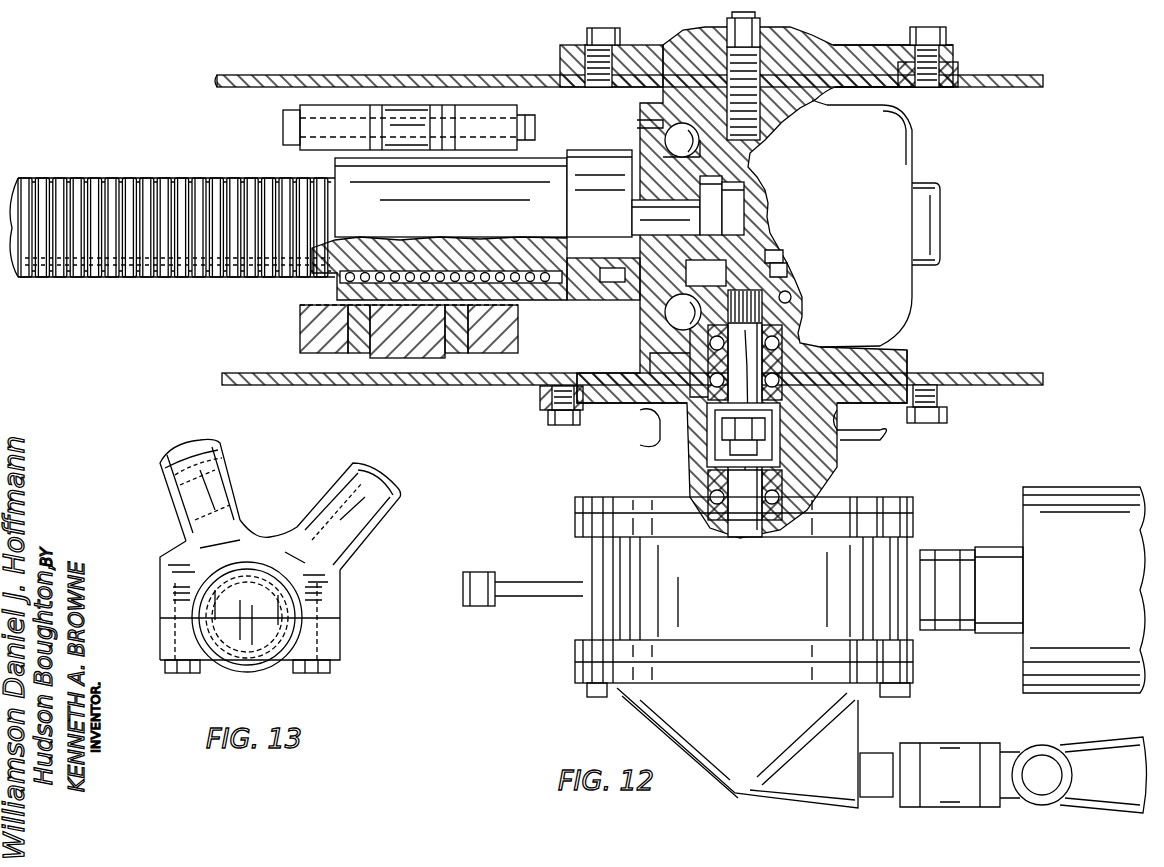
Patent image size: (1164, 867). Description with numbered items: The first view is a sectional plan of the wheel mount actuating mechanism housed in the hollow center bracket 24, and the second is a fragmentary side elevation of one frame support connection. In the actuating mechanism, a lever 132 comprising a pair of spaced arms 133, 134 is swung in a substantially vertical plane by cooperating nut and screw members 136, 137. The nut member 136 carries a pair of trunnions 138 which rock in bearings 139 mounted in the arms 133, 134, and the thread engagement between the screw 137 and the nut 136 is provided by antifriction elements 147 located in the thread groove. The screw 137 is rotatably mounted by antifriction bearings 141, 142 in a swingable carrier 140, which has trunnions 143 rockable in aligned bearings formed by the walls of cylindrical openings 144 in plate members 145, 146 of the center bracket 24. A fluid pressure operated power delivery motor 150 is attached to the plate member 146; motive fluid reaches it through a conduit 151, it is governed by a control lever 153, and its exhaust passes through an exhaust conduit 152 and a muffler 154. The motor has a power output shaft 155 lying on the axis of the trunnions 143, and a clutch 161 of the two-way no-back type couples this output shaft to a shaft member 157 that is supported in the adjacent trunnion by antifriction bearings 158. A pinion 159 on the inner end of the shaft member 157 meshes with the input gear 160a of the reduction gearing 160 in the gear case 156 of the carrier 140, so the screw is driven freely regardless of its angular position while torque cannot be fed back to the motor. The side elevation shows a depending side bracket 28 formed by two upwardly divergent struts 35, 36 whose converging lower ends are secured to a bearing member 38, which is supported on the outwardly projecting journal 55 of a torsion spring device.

In FIG. 12, the center bracket 24 is at (985, 74).
In FIG. 12, the arm of lever 134 is at (303, 106).
In FIG. 12, the antifriction bearing 141 is at (668, 130).
In FIG. 12, the swingable carrier 140 is at (643, 122).
In FIG. 12, the cylindrical opening 144 is at (812, 75).
In FIG. 12, the plate member 145 is at (870, 88).
In FIG. 12, the gear case 156 is at (905, 147).
In FIG. 12, the antifriction elements 147 is at (423, 272).
In FIG. 12, the input gear 160a is at (772, 253).
In FIG. 12, the reduction gearing 160 is at (780, 267).
In FIG. 12, the antifriction bearing 142 is at (797, 290).
In FIG. 12, the pinion 159 is at (706, 273).
In FIG. 12, the screw member 137 is at (207, 280).
In FIG. 12, the arm of lever 133 is at (302, 337).
In FIG. 12, the nut member 136 is at (543, 297).
In FIG. 12, the shaft member 157 is at (792, 304).
In FIG. 12, the antifriction bearings 158 is at (775, 342).
In FIG. 12, the lever 132 is at (317, 355).
In FIG. 12, the bearings 139 is at (360, 355).
In FIG. 12, the trunnions 138 is at (393, 358).
In FIG. 12, the trunnions 143 is at (650, 412).
In FIG. 12, the plate member 146 is at (827, 412).
In FIG. 12, the clutch 161 is at (817, 447).
In FIG. 12, the power output shaft 155 is at (717, 473).
In FIG. 12, the muffler 154 is at (1095, 476).
In FIG. 12, the exhaust conduit 152 is at (945, 567).
In FIG. 12, the control lever 153 is at (518, 584).
In FIG. 12, the power delivery motor 150 is at (620, 620).
In FIG. 12, the conduit 151 is at (878, 757).
In FIG. 13, the side bracket 28 is at (163, 483).
In FIG. 13, the strut 35 is at (197, 503).
In FIG. 13, the strut 36 is at (380, 521).
In FIG. 13, the bearing member 38 is at (330, 593).
In FIG. 13, the journal 55 is at (257, 640).